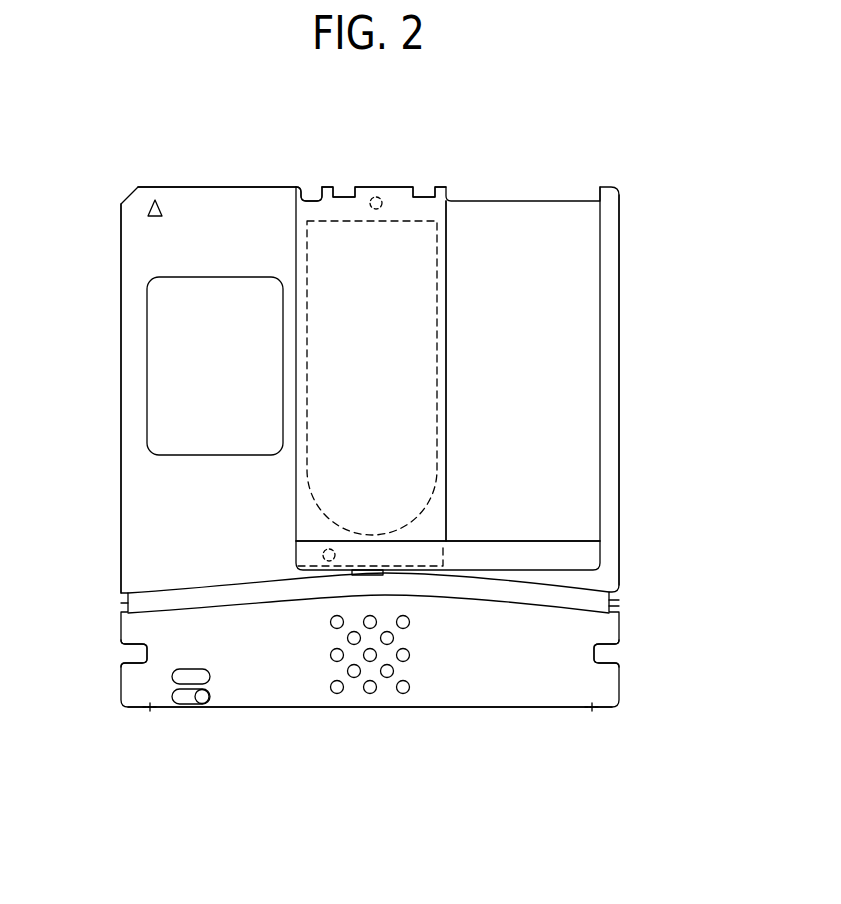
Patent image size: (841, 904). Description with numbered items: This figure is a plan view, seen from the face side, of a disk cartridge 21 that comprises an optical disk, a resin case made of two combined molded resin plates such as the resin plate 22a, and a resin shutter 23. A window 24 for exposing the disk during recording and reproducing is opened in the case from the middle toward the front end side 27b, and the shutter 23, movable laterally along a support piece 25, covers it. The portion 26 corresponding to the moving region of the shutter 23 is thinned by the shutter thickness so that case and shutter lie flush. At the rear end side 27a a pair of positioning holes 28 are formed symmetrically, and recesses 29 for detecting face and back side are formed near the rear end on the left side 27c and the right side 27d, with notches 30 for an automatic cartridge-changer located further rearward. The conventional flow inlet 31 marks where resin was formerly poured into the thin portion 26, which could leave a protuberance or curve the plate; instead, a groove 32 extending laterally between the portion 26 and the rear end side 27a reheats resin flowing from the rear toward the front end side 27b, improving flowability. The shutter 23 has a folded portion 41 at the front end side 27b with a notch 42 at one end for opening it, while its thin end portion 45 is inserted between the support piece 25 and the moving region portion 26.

The cartridge 21 is at (203, 171).
The resin plate 22a is at (138, 273).
The shutter 23 is at (397, 248).
The window 24 is at (445, 257).
The support piece 25 is at (575, 558).
The portion corresponding to the moving region of the shutter 26 is at (577, 332).
The rear end side 27a is at (458, 707).
The front end side 27b is at (229, 187).
The left side 27c is at (120, 374).
The right side 27d is at (623, 343).
The holes for positioning 28 is at (148, 712).
The recesses for detecting face and back side 29 is at (124, 603).
The notches for automatic cartridge-changer 30 is at (142, 656).
The flow inlet 31 is at (372, 196).
The groove 32 is at (192, 600).
The folded portion 41 is at (388, 188).
The notch 42 is at (318, 189).
The end portion 45 is at (440, 550).